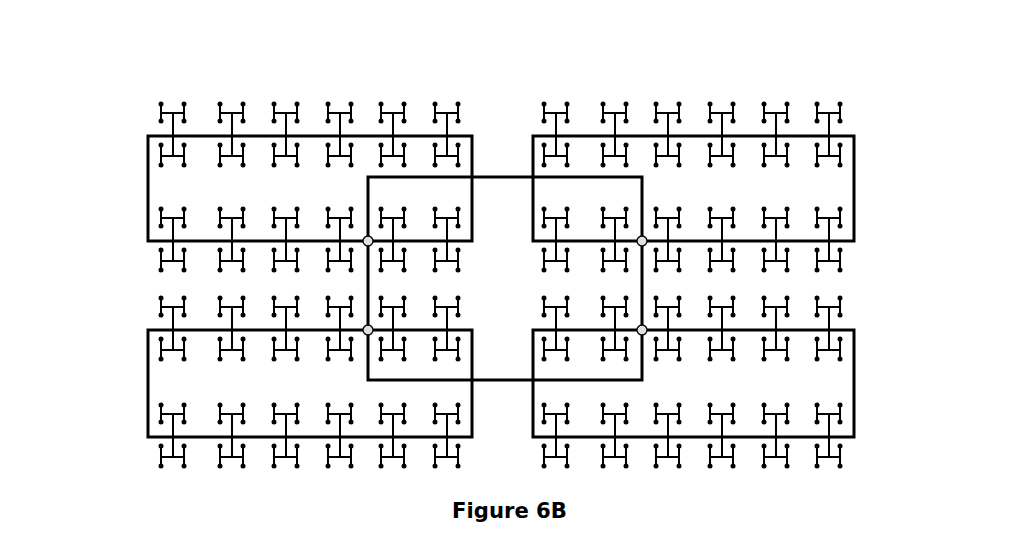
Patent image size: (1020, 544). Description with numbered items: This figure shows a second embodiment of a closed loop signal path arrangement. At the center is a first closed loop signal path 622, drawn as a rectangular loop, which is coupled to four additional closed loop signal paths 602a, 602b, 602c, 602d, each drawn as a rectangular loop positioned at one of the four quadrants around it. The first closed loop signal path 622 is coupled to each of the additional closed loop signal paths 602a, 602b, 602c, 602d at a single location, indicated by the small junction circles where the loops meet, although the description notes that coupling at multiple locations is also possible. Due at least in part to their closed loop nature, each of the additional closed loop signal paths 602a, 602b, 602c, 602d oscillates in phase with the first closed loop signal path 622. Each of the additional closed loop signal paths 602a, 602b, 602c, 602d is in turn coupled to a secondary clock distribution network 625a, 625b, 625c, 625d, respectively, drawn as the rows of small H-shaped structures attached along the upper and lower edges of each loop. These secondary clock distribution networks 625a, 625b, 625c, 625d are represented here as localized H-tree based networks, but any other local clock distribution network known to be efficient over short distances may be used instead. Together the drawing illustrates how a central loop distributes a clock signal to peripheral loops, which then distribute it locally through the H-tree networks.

The additional closed loop signal path 602a is at (148, 186).
The additional closed loop signal path 602b is at (148, 380).
The additional closed loop signal path 602c is at (855, 175).
The additional closed loop signal path 602d is at (855, 368).
The first closed loop signal path 622 is at (497, 177).
The secondary clock distribution network 625a is at (173, 110).
The secondary clock distribution network 625b is at (173, 460).
The secondary clock distribution network 625c is at (829, 110).
The secondary clock distribution network 625d is at (829, 460).